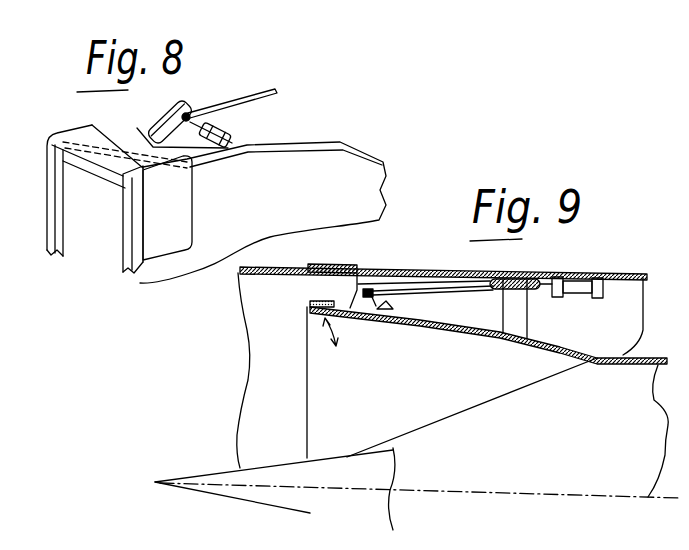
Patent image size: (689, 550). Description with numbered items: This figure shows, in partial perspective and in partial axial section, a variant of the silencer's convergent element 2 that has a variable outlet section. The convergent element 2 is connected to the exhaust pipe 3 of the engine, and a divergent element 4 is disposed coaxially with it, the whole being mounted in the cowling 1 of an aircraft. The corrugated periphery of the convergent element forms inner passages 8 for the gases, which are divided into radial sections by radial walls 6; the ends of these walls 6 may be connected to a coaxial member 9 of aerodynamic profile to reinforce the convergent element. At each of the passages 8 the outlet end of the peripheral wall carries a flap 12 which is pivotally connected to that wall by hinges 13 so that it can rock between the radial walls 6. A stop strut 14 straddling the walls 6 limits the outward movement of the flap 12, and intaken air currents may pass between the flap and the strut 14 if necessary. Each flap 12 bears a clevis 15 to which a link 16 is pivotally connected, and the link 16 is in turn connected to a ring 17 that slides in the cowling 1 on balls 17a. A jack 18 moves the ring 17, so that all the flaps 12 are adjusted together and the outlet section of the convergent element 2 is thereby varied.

In FIG. 9, the cowling 1 is at (617, 276).
In FIG. 8, the convergent element 2 is at (263, 212).
In FIG. 9, the convergent element 2 is at (417, 404).
In FIG. 9, the exhaust pipe 3 is at (667, 360).
In FIG. 9, the divergent element 4 is at (263, 370).
In FIG. 8, the walls 6 is at (53, 243).
In FIG. 9, the walls 6 is at (322, 395).
In FIG. 8, the inner passages 8 is at (98, 230).
In FIG. 9, the member of aerodynamic profile 9 is at (263, 492).
In FIG. 8, the flap 12 is at (92, 165).
In FIG. 9, the flap 12 is at (348, 312).
In FIG. 8, the hinges 13 is at (228, 130).
In FIG. 9, the hinges 13 is at (393, 305).
In FIG. 8, the stop strut 14 is at (160, 232).
In FIG. 9, the stop strut 14 is at (320, 301).
In FIG. 8, the clevis 15 is at (157, 118).
In FIG. 9, the clevis 15 is at (366, 302).
In FIG. 8, the link 16 is at (222, 104).
In FIG. 9, the link 16 is at (455, 270).
In FIG. 9, the ring 17 is at (513, 293).
In FIG. 9, the balls 17a is at (510, 277).
In FIG. 9, the jack 18 is at (575, 290).